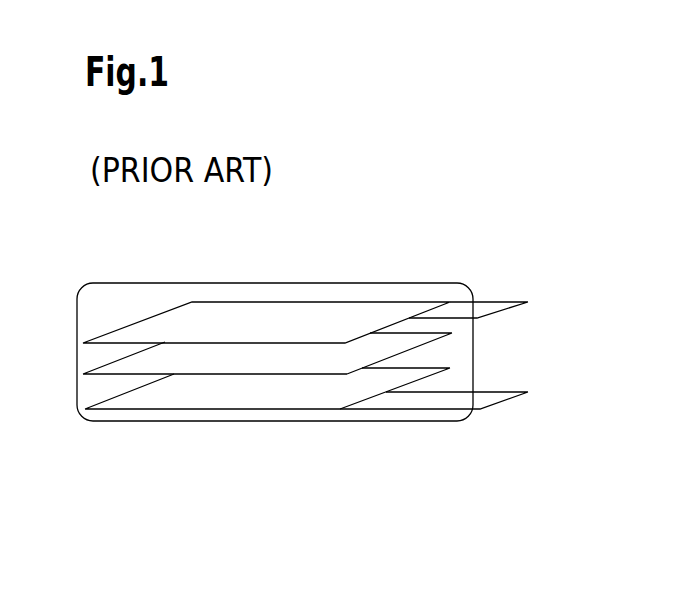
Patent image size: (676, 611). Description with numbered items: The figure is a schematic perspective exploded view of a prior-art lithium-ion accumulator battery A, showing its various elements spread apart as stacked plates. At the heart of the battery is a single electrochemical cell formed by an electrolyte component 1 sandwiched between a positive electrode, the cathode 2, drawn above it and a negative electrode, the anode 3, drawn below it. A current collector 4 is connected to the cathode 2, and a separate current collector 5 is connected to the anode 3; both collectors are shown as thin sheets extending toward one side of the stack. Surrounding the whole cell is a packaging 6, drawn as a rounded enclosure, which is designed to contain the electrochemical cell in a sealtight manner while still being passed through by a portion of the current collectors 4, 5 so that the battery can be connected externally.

The electrolyte component 1 is at (428, 343).
The cathode 2 is at (285, 322).
The anode 3 is at (210, 388).
The current collector 4 is at (486, 307).
The current collector 5 is at (493, 392).
The packaging 6 is at (290, 421).
The prior art laminated assembly A is at (398, 266).